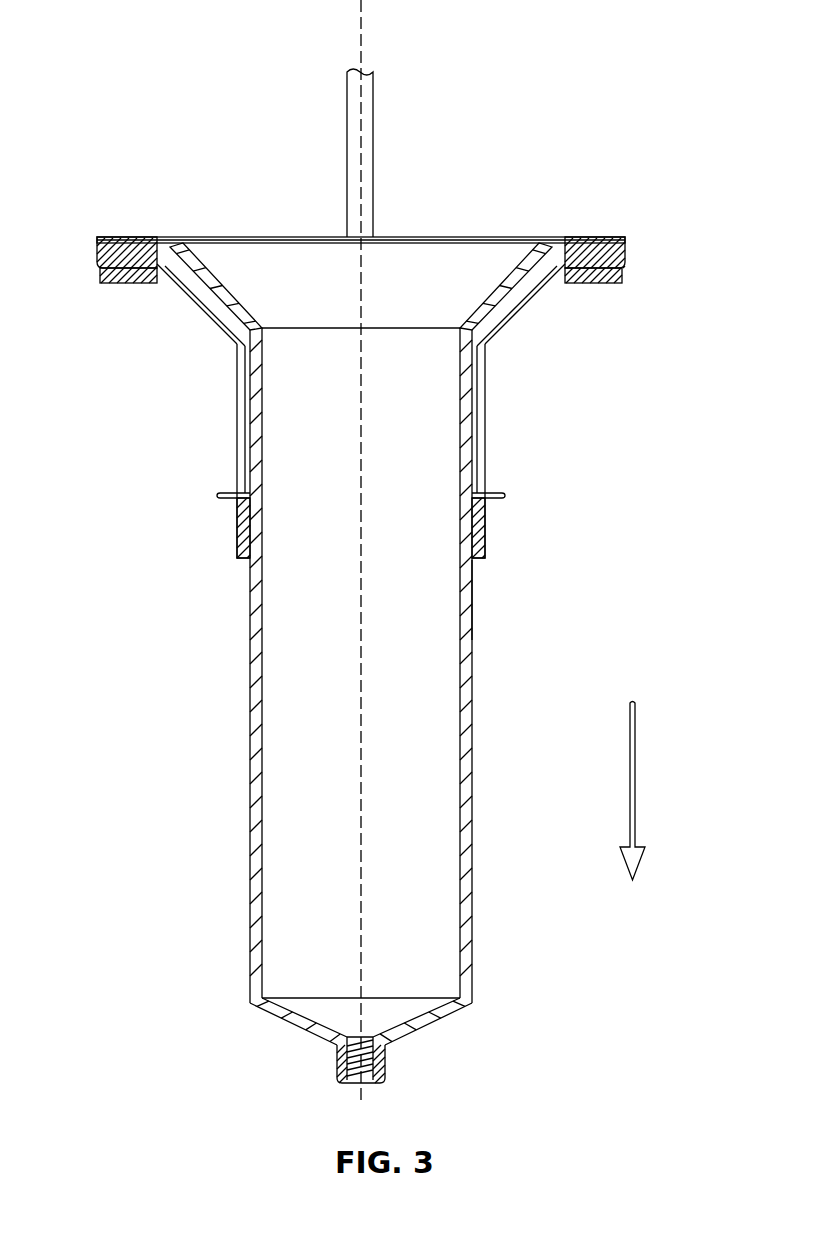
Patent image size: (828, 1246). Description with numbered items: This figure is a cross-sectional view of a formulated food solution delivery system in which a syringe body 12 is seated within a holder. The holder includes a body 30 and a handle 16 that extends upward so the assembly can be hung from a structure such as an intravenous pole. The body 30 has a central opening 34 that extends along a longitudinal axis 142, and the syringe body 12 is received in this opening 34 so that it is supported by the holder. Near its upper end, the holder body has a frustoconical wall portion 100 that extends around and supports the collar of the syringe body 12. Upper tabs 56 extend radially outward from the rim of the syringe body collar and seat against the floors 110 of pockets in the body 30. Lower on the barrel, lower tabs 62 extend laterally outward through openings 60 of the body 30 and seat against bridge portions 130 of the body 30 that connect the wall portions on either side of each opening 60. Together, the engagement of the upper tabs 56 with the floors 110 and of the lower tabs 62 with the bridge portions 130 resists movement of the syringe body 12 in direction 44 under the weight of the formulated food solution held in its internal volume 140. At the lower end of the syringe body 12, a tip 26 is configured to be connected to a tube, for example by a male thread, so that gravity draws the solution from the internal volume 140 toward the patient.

The longitudinal axis 142 is at (362, 42).
The handle 16 is at (374, 150).
The upper tab 56 is at (116, 250).
The floor 110 is at (138, 285).
The frustoconical wall portion 100 is at (190, 293).
The opening 60 is at (242, 357).
The body 30 is at (486, 440).
The lower tab 62 is at (218, 494).
The bridge portion 130 is at (240, 532).
The central opening 34 is at (474, 573).
The syringe body 12 is at (474, 672).
The internal volume 140 is at (283, 808).
The direction 44 is at (636, 788).
The tip 26 is at (338, 1063).